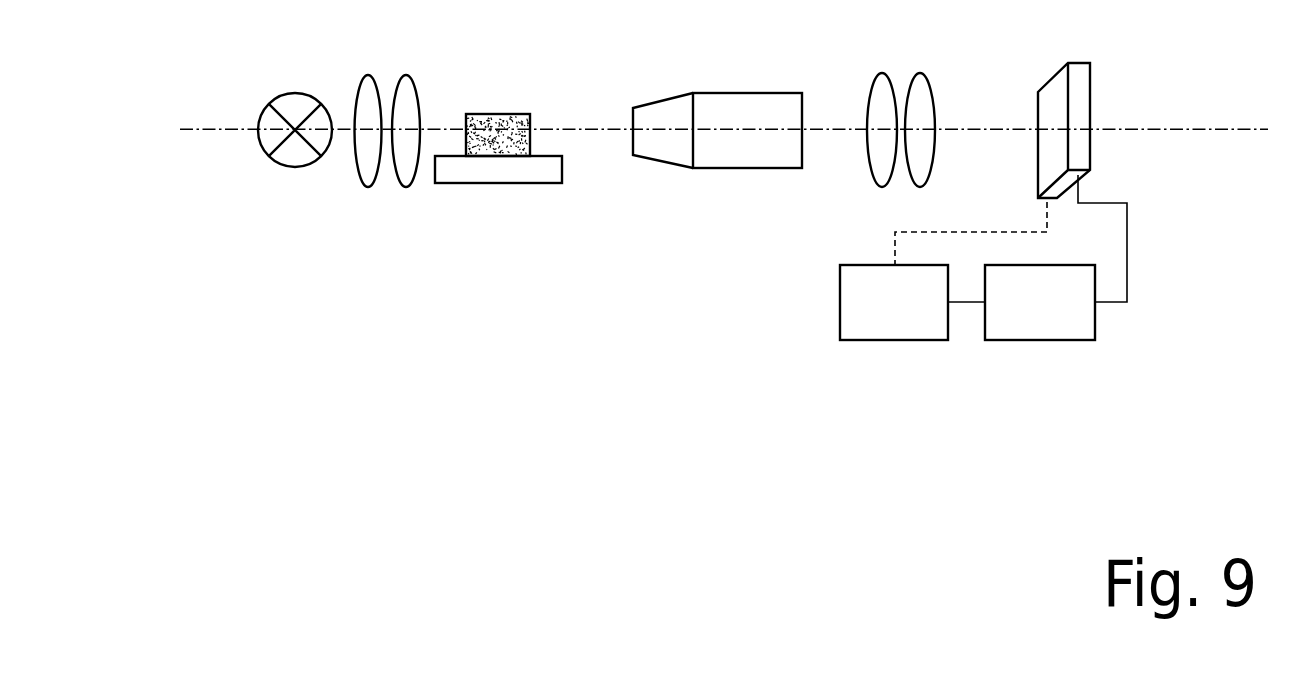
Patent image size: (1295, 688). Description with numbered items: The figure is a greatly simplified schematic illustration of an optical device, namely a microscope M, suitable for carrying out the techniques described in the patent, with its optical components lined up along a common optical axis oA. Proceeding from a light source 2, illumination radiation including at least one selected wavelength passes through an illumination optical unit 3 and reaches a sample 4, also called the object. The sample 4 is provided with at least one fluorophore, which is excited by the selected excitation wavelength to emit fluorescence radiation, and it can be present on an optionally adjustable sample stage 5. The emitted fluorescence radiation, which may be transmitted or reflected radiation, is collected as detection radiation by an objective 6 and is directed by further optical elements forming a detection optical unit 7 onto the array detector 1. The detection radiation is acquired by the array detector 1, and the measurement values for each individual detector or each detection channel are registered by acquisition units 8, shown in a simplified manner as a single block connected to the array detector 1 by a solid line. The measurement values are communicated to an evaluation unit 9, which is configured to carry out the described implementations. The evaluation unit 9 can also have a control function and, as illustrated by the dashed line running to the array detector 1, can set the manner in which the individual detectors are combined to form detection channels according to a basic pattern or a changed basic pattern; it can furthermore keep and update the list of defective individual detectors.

The array detector 1 is at (1052, 77).
The light source 2 is at (308, 93).
The illumination optical unit 3 is at (402, 76).
The sample 4 is at (507, 114).
The sample stage 5 is at (492, 183).
The objective 6 is at (732, 93).
The detection optical unit 7 is at (914, 74).
The acquisition unit 8 is at (1029, 319).
The evaluation unit 9 is at (884, 319).
The microscope M is at (226, 84).
The optical axis oA is at (227, 131).